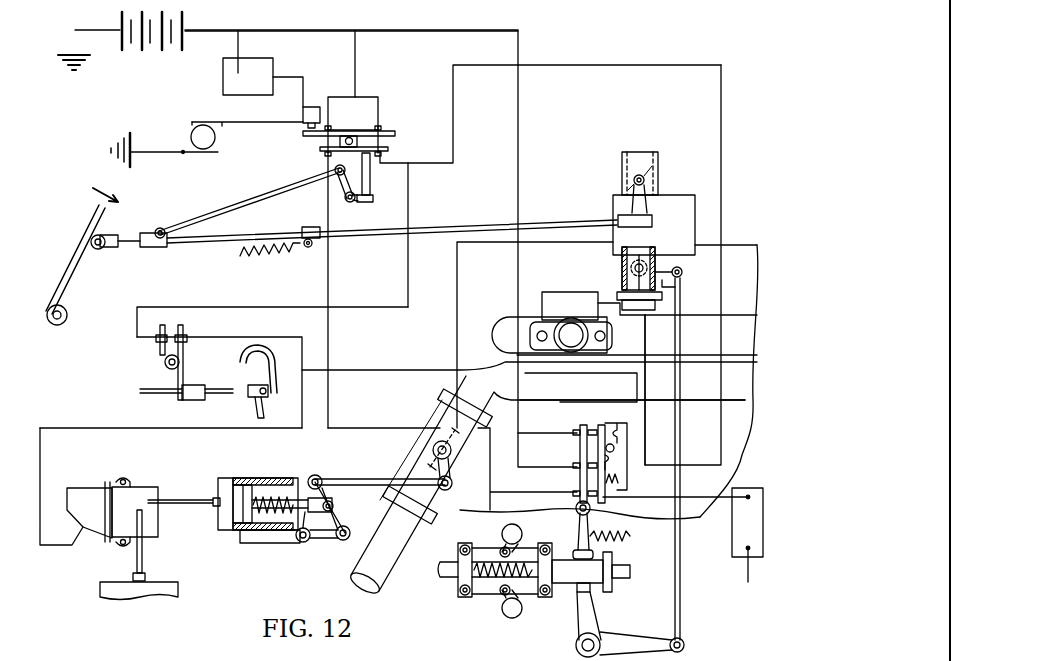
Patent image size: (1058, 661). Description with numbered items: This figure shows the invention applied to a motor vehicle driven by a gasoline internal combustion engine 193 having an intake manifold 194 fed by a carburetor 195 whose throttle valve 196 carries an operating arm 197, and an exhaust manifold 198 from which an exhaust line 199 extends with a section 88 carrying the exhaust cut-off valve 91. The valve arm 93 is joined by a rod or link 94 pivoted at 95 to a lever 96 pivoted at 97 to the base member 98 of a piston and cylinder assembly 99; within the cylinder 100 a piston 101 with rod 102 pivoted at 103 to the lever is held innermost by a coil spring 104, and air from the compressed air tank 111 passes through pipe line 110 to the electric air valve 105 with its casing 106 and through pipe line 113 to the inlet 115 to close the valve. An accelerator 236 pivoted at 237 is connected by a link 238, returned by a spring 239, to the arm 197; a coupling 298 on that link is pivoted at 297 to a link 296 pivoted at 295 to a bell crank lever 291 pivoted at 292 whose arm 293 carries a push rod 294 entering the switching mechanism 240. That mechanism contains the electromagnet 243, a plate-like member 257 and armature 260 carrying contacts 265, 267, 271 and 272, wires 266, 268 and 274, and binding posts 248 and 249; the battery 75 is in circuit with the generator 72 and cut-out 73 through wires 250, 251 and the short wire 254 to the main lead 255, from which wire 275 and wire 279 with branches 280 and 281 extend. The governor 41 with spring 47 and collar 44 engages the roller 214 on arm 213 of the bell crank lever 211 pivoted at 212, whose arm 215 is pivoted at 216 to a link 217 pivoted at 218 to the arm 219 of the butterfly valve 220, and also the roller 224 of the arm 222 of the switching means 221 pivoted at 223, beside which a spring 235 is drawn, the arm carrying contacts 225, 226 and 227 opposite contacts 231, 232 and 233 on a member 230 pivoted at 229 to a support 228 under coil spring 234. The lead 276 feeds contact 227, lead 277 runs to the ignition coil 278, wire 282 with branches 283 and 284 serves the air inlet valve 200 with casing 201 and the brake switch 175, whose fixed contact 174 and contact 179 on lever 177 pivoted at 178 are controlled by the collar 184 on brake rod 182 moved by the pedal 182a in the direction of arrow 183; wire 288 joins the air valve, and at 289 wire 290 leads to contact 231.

The governor 41 is at (477, 608).
The collar 44 is at (618, 572).
The coil spring 47 is at (473, 573).
The generator 72 is at (192, 133).
The cut-out 73 is at (223, 87).
The battery 75 is at (138, 57).
The section 88 is at (429, 415).
The exhaust line cut-off valve 91 is at (460, 474).
The arm 93 is at (433, 462).
The rod or link 94 is at (399, 478).
The pivot 95 is at (320, 477).
The lever 96 is at (339, 492).
The pivot 97 is at (341, 541).
The base member 98 is at (283, 543).
The piston and cylinder assembly 99 is at (237, 554).
The cylinder 100 is at (284, 480).
The piston 101 is at (249, 487).
The rod 102 is at (305, 543).
The pivot 103 is at (337, 507).
The coil spring 104 is at (268, 522).
The electric air valve 105 is at (99, 478).
The casing 106 is at (143, 490).
The pipe line 110 is at (137, 564).
The compressed air tank or reservoir 111 is at (112, 593).
The pipe line 113 is at (173, 506).
The inlet 115 is at (211, 497).
The contact 174 is at (166, 333).
The switch 175 is at (151, 357).
The arm or lever 177 is at (176, 382).
The pivot 178 is at (180, 361).
The contact 179 is at (185, 332).
The brake rod 182 is at (251, 388).
The brake pedal or lever 182a is at (304, 362).
The arrow 183 is at (242, 405).
The collar 184 is at (188, 401).
The internal combustion engine 193 is at (441, 334).
The intake manifold 194 is at (491, 335).
The carburetor 195 is at (683, 210).
The throttle valve 196 is at (630, 171).
The operating arm 197 is at (640, 206).
The exhaust manifold 198 is at (467, 386).
The exhaust line 199 is at (358, 594).
The air inlet valve 200 is at (532, 312).
The casing 201 is at (573, 300).
The bell crank lever 211 is at (575, 616).
The pivot 212 is at (581, 644).
The arm 213 is at (601, 603).
The roller 214 is at (578, 592).
The arm 215 is at (637, 636).
The pivot 216 is at (686, 643).
The link 217 is at (681, 580).
The pivot 218 is at (683, 272).
The arm 219 is at (679, 288).
The butterfly valve 220 is at (622, 265).
The switching means 221 is at (557, 502).
The arm 222 is at (577, 522).
The pivot 223 is at (592, 508).
The roller 224 is at (597, 553).
The contact 225 is at (579, 428).
The contact 226 is at (579, 452).
The contact 227 is at (579, 480).
The support 228 is at (627, 445).
The pivot 229 is at (616, 450).
The member 230 is at (598, 425).
The contact 231 is at (616, 423).
The contact 232 is at (606, 478).
The contact 233 is at (612, 487).
The coil spring 234 is at (630, 481).
The spring 235 is at (632, 536).
The accelerator 236 is at (80, 237).
The pivot 237 is at (51, 326).
The link 238 is at (501, 222).
The spring 239 is at (246, 258).
The switching mechanism 240 is at (291, 153).
The electromagnet 243 is at (313, 106).
The binding post 248 is at (360, 97).
The binding post 249 is at (400, 168).
The wire 250 is at (240, 125).
The wire 251 is at (303, 78).
The short wire 254 is at (236, 47).
The main lead 255 is at (318, 30).
The plate-like member 257 is at (389, 149).
The armature 260 is at (395, 134).
The contact 265 is at (382, 128).
The wire 266 is at (380, 112).
The contact 267 is at (386, 156).
The wire 268 is at (405, 186).
The contact 271 is at (335, 131).
The contact 272 is at (319, 143).
The wire 274 is at (330, 110).
The wire 275 is at (355, 65).
The lead 276 is at (329, 272).
The lead 277 is at (719, 512).
The ignition coil 278 is at (734, 545).
The wire 279 is at (518, 143).
The branch 280 is at (562, 434).
The branch 281 is at (563, 459).
The wire 282 is at (453, 130).
The wire 283 is at (410, 209).
The wire 284 is at (650, 343).
The wire 288 is at (273, 343).
The connection 289 is at (302, 372).
The wire 290 is at (391, 372).
The bell crank lever 291 is at (331, 201).
The pivot 292 is at (344, 206).
The arm 293 is at (360, 205).
The push rod 294 is at (373, 197).
The pivot 295 is at (334, 168).
The link 296 is at (228, 216).
The pivot 297 is at (165, 226).
The coupling 298 is at (144, 248).